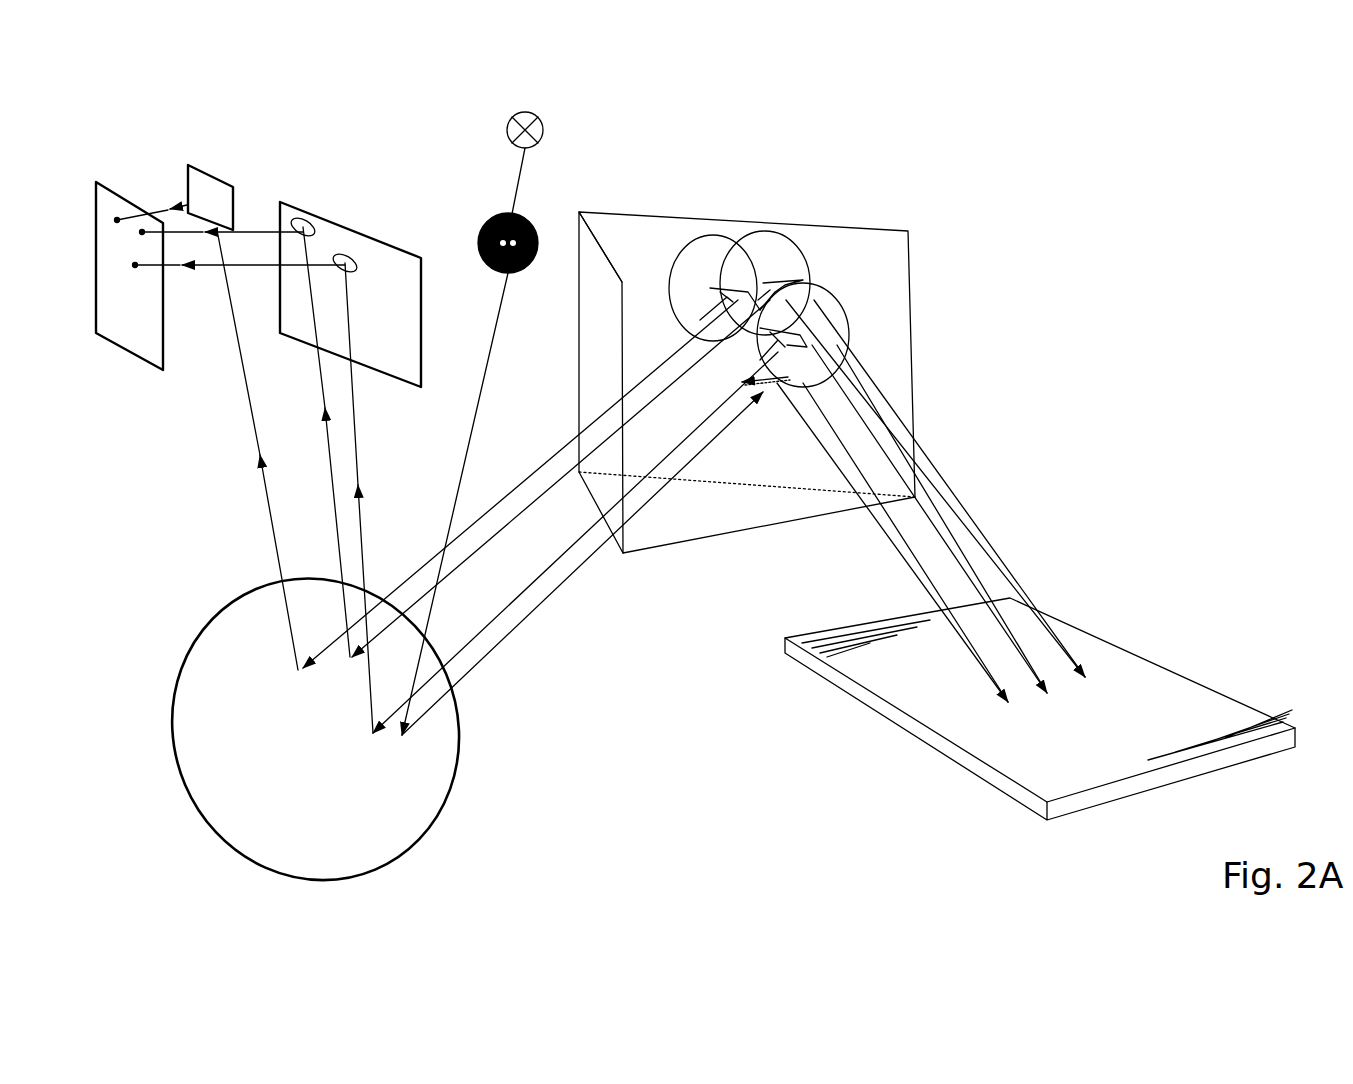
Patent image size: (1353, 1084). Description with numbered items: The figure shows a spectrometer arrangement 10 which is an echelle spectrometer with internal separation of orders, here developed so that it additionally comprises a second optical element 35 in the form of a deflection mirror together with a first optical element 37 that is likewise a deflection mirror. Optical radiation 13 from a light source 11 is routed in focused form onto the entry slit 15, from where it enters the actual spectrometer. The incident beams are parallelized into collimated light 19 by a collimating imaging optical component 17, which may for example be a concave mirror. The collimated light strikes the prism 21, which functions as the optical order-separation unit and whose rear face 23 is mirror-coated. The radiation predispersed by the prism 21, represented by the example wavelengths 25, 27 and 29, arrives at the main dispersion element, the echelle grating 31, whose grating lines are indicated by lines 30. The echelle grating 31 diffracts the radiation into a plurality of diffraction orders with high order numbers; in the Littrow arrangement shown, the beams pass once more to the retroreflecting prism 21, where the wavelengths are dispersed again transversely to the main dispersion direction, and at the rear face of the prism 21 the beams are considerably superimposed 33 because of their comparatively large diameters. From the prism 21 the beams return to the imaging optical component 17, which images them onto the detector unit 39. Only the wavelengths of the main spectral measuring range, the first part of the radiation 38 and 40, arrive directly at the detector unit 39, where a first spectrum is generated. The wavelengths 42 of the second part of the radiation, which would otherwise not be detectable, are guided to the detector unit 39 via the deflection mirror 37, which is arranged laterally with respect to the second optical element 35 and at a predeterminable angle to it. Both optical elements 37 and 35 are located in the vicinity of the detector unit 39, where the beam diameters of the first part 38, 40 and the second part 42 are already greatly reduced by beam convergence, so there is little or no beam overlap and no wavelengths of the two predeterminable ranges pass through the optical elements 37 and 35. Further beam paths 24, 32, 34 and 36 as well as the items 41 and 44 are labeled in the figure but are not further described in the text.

The spectrometer arrangement 10 is at (1012, 100).
The light source 11 is at (525, 111).
The optical radiation 13 is at (522, 177).
The entry slit 15 is at (480, 233).
The collimating imaging optical component 17 is at (315, 882).
The parallelized light beams 19 is at (500, 647).
The prism 21 is at (848, 264).
The rear face of the prism 23 is at (823, 222).
The illumination beam 24 is at (472, 423).
The wavelength λ1 25 is at (980, 567).
The wavelength λ2 27 is at (917, 533).
The wavelength λ3 29 is at (897, 548).
The grating lines 30 is at (1203, 737).
The echelle grating 31 is at (992, 782).
The light ray 32 is at (450, 700).
The superimposed beams 33 is at (703, 237).
The light ray 34 is at (473, 657).
The second optical element 35 is at (421, 327).
The light ray 36 is at (503, 500).
The first optical element 37 is at (200, 165).
The first part of the radiation 38 is at (360, 457).
The detector unit 39 is at (120, 337).
The first part of the radiation 40 is at (321, 400).
The detection region 41 is at (75, 157).
The second part of the radiation 42 is at (272, 545).
The aperture 44 is at (345, 256).